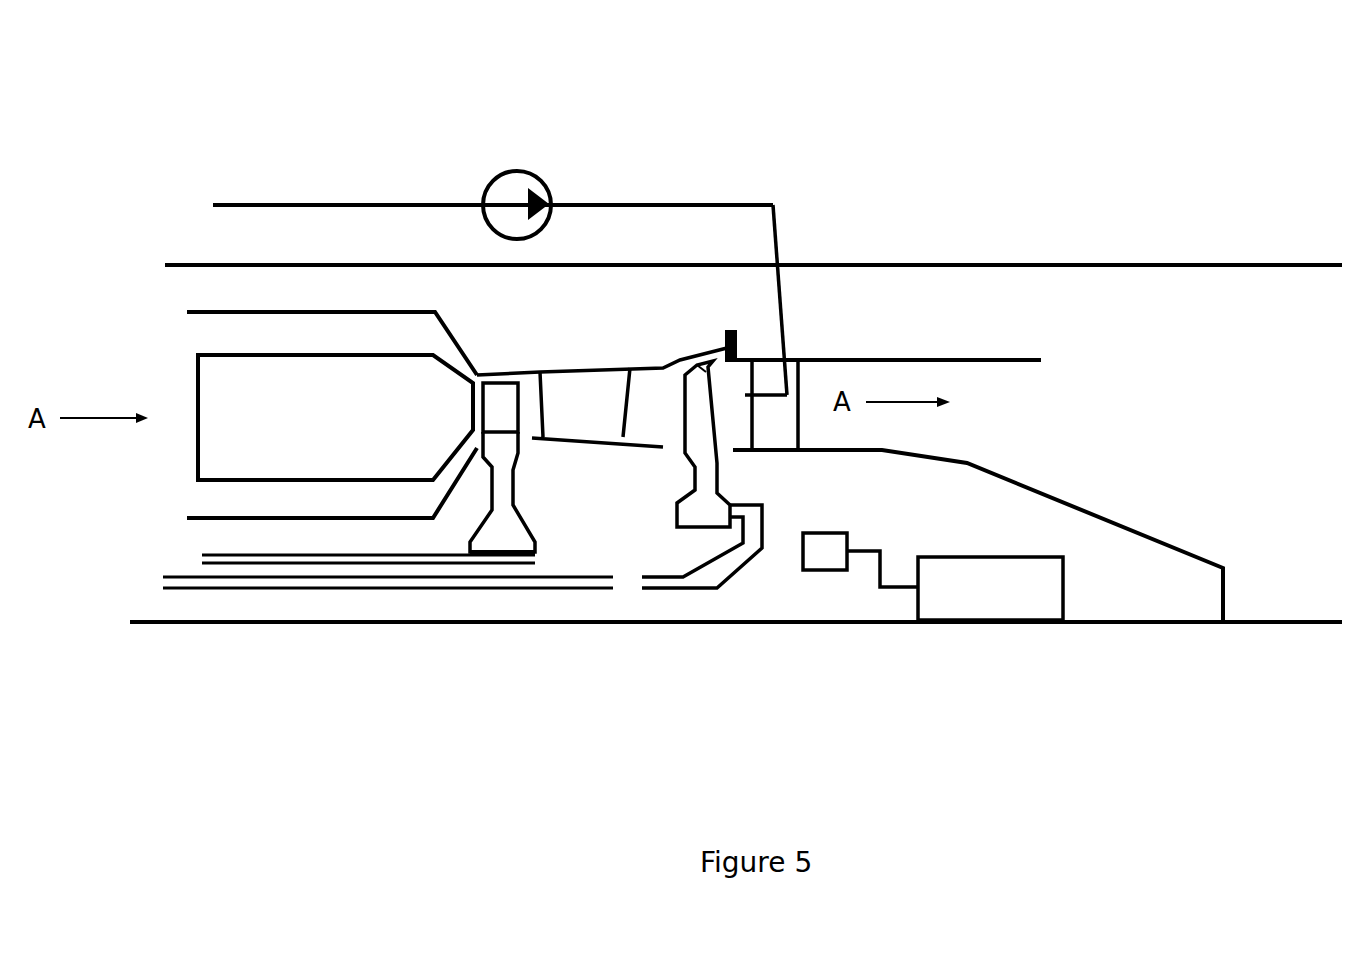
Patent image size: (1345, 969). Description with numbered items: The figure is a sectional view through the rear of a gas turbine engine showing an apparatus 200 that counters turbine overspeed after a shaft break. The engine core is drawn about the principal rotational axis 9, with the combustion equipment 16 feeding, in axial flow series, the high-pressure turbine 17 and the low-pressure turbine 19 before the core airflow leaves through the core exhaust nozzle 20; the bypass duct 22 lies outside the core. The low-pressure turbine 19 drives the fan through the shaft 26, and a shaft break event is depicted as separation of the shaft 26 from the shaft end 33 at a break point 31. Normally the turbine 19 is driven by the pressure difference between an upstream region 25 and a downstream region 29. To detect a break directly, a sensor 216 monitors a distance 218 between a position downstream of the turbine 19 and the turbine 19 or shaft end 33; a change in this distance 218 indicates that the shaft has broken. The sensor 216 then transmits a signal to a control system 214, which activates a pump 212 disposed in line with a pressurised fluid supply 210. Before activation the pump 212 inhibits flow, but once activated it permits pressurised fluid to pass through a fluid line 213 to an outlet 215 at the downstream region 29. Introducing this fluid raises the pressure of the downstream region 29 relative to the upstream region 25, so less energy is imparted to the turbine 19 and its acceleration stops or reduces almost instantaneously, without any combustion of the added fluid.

The apparatus 200 is at (952, 194).
The principal rotational axis 9 is at (1095, 623).
The pressurised fluid supply 210 is at (364, 204).
The pump 212 is at (515, 170).
The fluid line 213 is at (722, 203).
The outlet 215 is at (782, 360).
The combustion equipment 16 is at (353, 377).
The high-pressure turbine 17 is at (462, 403).
The low-pressure turbine 19 is at (683, 362).
The downstream region 29 is at (720, 398).
The bypass duct 22 is at (1031, 322).
The core exhaust nozzle 20 is at (1025, 388).
The upstream region 25 is at (660, 410).
The shaft 26 is at (308, 590).
The break point 31 is at (625, 590).
The shaft end 33 is at (695, 590).
The distance 218 is at (780, 550).
The sensor 216 is at (823, 572).
The control system 214 is at (1013, 604).